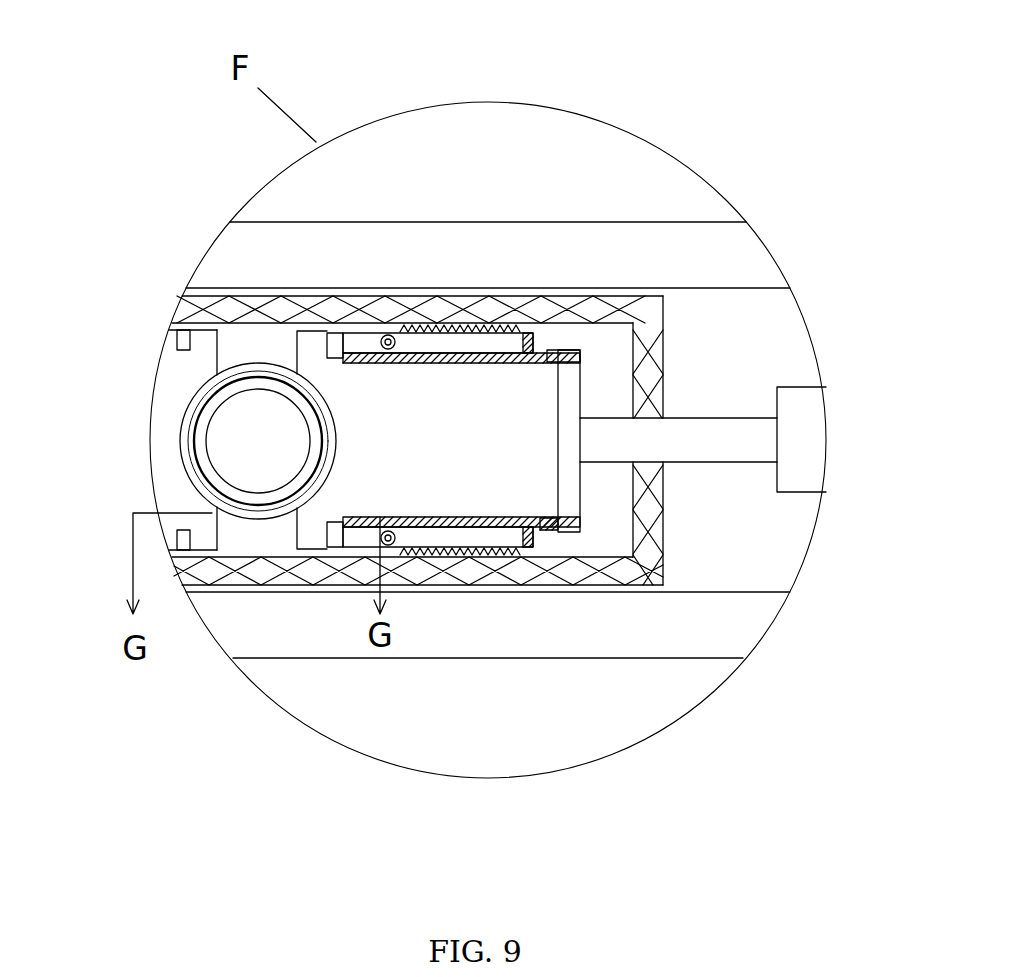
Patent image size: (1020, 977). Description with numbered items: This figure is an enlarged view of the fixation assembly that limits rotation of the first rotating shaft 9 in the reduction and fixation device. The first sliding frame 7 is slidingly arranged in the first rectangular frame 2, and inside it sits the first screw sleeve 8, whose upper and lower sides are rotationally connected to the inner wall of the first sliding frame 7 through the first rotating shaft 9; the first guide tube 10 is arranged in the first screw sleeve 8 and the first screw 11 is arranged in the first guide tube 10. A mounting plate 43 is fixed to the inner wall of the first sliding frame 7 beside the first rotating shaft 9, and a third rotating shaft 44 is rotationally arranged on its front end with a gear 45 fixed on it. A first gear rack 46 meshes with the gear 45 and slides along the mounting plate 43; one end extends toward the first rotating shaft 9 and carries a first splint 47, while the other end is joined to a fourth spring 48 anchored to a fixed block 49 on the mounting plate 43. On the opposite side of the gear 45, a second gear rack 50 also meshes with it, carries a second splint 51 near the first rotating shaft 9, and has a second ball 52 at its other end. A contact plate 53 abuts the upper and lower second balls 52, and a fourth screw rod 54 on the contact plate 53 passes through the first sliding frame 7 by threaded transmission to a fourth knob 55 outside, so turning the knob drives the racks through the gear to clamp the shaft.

The first rectangular frame 2 is at (460, 622).
The first sliding frame 7 is at (530, 583).
The first screw sleeve 8 is at (190, 403).
The first rotating shaft 9 is at (267, 535).
The first guide tube 10 is at (200, 436).
The first screw 11 is at (233, 447).
The mounting plate 43 is at (500, 328).
The third rotating shaft 44 is at (392, 336).
The gear 45 is at (408, 326).
The first gear rack 46 is at (203, 328).
The first splint 47 is at (183, 333).
The fourth spring 48 is at (465, 338).
The fixed block 49 is at (537, 328).
The second gear rack 50 is at (532, 386).
The second splint 51 is at (330, 334).
The second ball 52 is at (570, 346).
The contact plate 53 is at (567, 485).
The fourth screw rod 54 is at (710, 438).
The fourth knob 55 is at (808, 462).